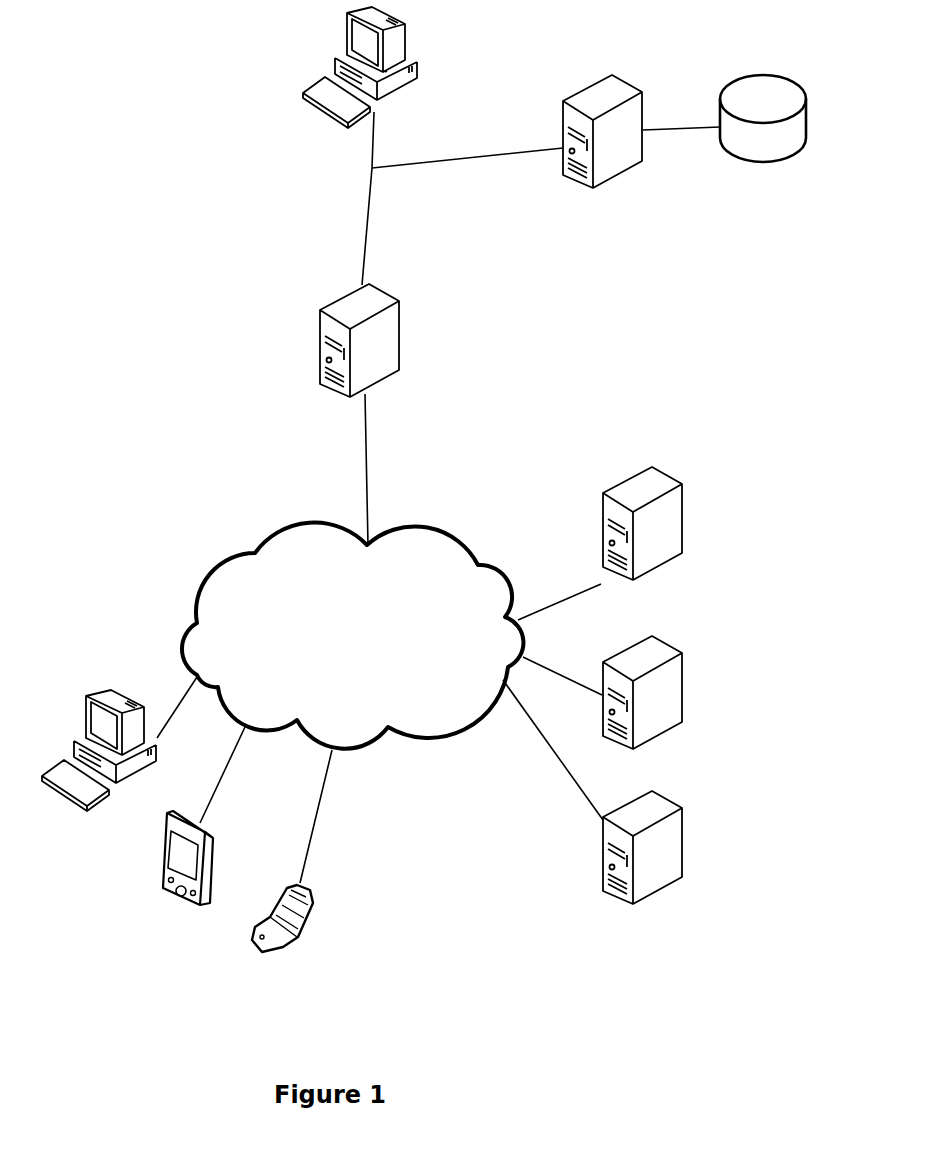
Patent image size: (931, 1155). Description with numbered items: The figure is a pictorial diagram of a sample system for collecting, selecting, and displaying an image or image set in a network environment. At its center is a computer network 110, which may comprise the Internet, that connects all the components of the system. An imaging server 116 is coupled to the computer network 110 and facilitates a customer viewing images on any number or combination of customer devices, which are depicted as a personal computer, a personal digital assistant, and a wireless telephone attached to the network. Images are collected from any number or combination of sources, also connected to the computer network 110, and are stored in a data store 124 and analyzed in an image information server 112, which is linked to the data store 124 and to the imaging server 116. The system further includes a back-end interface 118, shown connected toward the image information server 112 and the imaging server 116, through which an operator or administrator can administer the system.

The back-end interface 118 is at (348, 67).
The image information server 112 is at (602, 146).
The data store 124 is at (763, 140).
The imaging server 116 is at (383, 340).
The computer network 110 is at (352, 636).